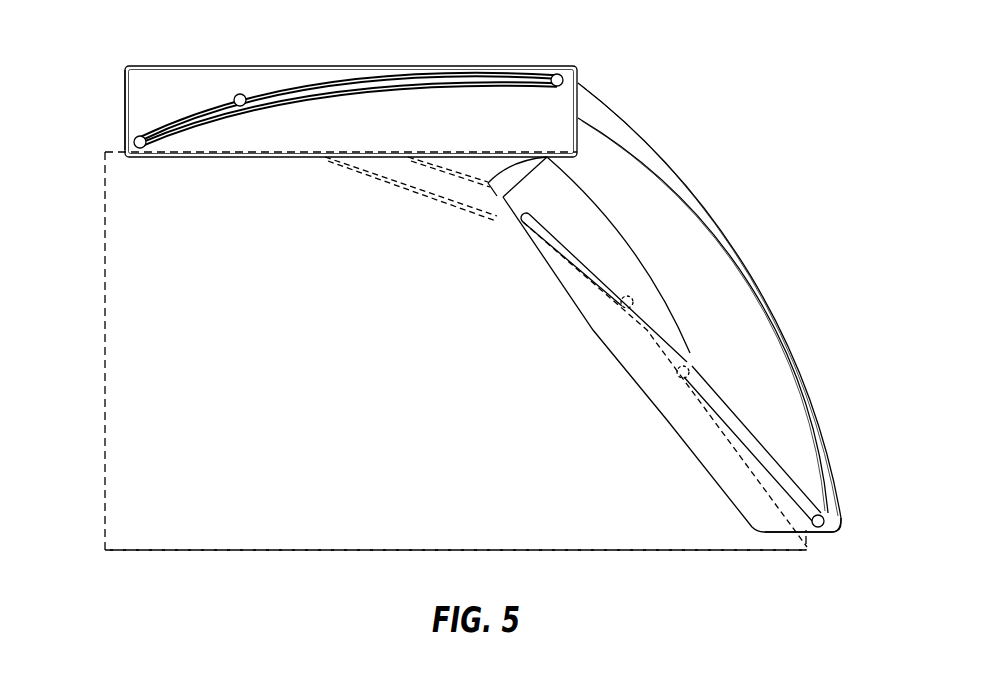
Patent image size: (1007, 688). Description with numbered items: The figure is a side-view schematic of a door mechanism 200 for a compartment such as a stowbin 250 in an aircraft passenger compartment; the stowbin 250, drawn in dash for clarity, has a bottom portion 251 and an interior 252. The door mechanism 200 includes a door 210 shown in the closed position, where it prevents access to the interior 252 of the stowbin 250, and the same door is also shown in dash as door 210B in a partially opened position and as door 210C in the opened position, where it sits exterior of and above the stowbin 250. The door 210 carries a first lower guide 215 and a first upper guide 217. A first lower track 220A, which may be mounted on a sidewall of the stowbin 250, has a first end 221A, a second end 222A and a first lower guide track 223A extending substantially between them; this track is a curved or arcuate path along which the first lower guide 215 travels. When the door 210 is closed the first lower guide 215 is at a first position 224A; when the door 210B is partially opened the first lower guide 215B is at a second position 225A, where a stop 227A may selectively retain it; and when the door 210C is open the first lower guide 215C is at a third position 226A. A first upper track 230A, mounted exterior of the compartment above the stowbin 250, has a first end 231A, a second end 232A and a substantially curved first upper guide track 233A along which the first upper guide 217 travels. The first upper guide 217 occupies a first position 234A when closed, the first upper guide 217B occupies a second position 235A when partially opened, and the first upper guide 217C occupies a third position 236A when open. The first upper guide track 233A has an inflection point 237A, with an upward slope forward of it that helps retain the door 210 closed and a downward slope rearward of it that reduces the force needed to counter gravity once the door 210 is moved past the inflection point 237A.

The door mechanism 200 is at (776, 48).
The door 210 is at (762, 305).
The door in partially opened position 210B is at (576, 190).
The door in opened position 210C is at (414, 182).
The first lower guide 215 is at (820, 528).
The first lower guide 215B is at (676, 380).
The first lower guide 215C is at (640, 300).
The first upper guide 217 is at (562, 74).
The first upper guide 217B is at (238, 94).
The first upper guide 217C is at (145, 149).
The first lower track 220A is at (693, 427).
The first end 221A is at (770, 537).
The second end 222A is at (495, 212).
The first lower guide track 223A is at (753, 445).
The first position 224A is at (831, 502).
The second position 225A is at (699, 356).
The third position 226A is at (614, 303).
The stop 227A is at (676, 365).
The first upper track 230A is at (308, 143).
The first end 231A is at (595, 113).
The second end 232A is at (125, 78).
The first upper guide track 233A is at (349, 72).
The first position 234A is at (549, 96).
The second position 235A is at (241, 124).
The third position 236A is at (126, 142).
The inflection point 237A is at (461, 92).
The stowbin 250 is at (105, 332).
The bottom portion 251 is at (165, 552).
The interior 252 is at (333, 385).